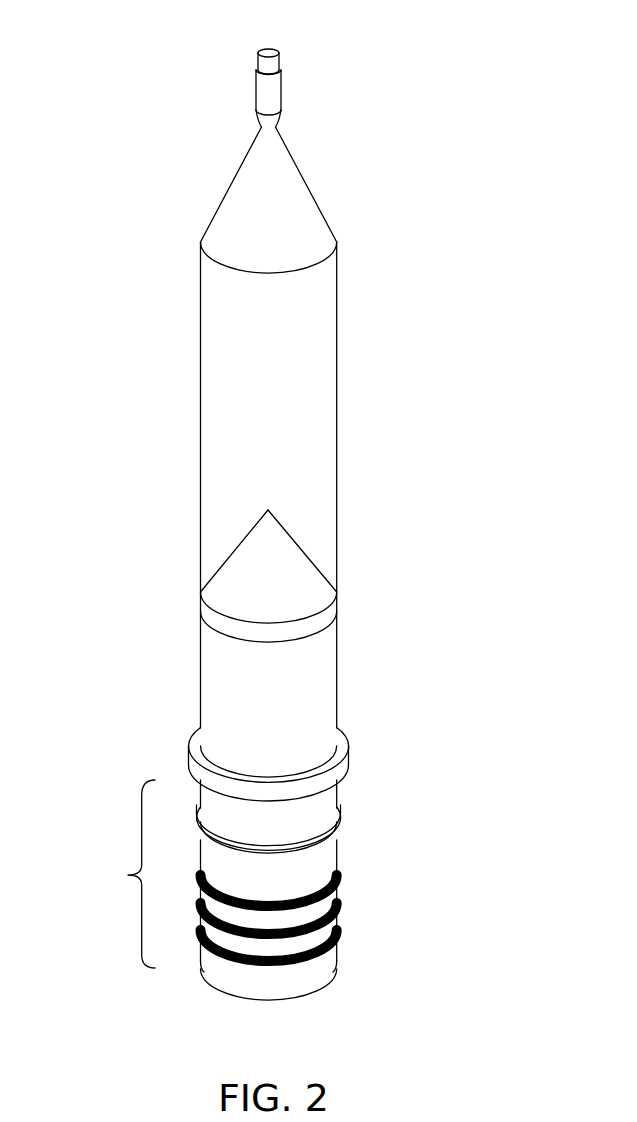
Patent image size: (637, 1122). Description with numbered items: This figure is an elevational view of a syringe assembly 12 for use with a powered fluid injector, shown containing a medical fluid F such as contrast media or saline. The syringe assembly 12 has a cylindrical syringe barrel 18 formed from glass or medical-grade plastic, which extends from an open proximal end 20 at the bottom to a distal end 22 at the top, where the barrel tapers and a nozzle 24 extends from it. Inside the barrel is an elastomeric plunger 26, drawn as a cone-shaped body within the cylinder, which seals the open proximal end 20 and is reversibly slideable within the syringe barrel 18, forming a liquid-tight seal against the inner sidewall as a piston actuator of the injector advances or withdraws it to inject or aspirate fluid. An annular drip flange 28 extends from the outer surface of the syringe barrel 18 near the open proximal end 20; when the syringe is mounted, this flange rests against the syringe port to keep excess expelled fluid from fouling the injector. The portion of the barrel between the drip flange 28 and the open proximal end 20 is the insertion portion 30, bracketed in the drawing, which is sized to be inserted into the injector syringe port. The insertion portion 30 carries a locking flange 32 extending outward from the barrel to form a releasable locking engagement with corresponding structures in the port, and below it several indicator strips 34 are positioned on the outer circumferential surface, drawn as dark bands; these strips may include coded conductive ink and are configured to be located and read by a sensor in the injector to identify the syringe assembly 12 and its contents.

The syringe assembly 12 is at (157, 282).
The syringe barrel 18 is at (337, 363).
The open proximal end 20 is at (308, 1000).
The distal end 22 is at (297, 183).
The nozzle 24 is at (273, 92).
The plunger 26 is at (283, 550).
The drip flange 28 is at (345, 740).
The insertion portion 30 is at (125, 874).
The locking flange 32 is at (340, 808).
The indicator strip 34 is at (338, 902).
The medical fluid F is at (213, 360).